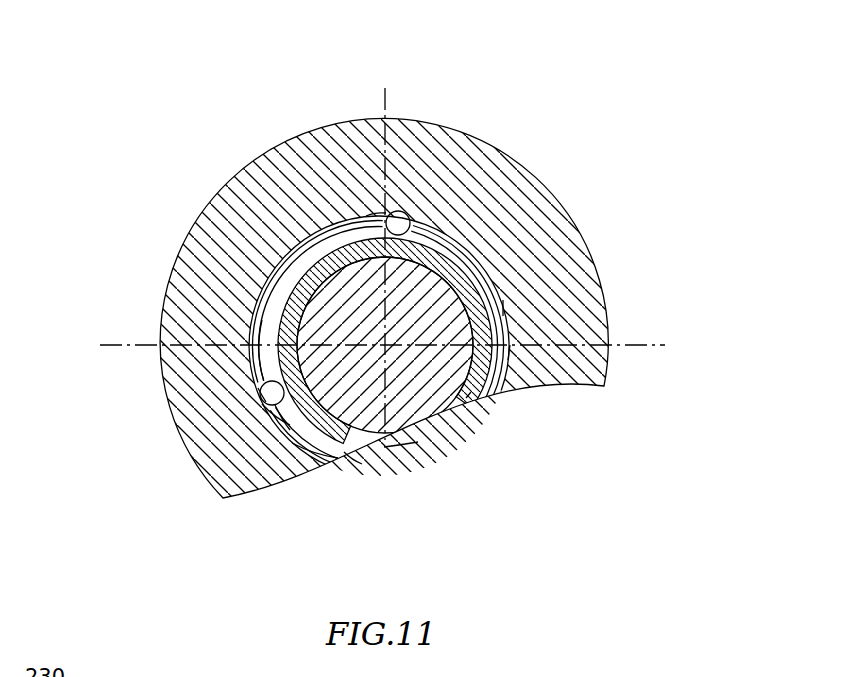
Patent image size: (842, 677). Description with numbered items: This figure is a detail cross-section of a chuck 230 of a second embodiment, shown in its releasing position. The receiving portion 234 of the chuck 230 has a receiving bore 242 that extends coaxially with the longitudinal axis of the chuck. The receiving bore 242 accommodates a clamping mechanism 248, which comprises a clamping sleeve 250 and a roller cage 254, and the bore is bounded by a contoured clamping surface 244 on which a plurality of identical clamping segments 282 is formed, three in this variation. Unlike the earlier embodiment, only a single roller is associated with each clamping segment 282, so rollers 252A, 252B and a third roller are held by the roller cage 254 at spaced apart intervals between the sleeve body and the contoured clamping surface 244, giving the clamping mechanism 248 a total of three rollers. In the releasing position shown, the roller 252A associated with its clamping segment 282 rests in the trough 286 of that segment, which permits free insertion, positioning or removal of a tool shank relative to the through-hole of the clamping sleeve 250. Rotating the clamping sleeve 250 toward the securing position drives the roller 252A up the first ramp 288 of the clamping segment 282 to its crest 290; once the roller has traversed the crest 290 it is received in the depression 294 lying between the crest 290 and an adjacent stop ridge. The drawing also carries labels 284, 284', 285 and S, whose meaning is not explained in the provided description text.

The chuck 230 is at (146, 64).
The receiving portion 234 is at (560, 248).
The receiving bore 242 is at (508, 360).
The contoured clamping surface 244 is at (503, 316).
The clamping mechanism 248 is at (432, 234).
The clamping sleeve 250 is at (384, 447).
The roller 252A is at (282, 410).
The roller 252B is at (402, 212).
The roller cage 254 is at (350, 454).
The clamping segment 282 is at (255, 298).
The sleeve portion 284 is at (224, 470).
The sleeve portion 284' is at (352, 133).
The sleeve portion 285 is at (262, 404).
The trough 286 is at (259, 392).
The first ramp 288 is at (252, 361).
The crest 290 is at (344, 452).
The depression 294 is at (275, 405).
The gap S is at (466, 398).